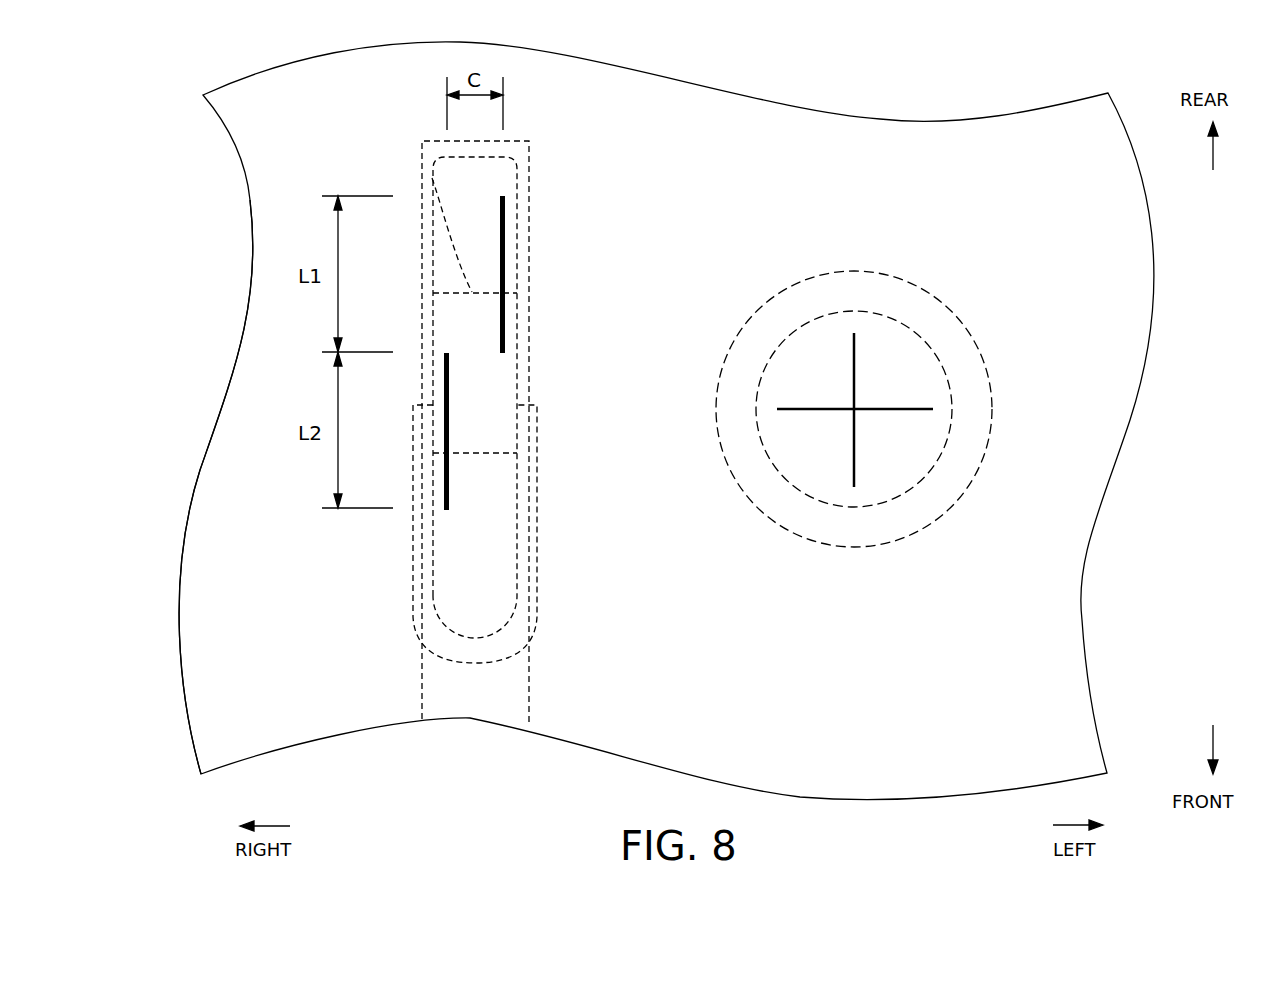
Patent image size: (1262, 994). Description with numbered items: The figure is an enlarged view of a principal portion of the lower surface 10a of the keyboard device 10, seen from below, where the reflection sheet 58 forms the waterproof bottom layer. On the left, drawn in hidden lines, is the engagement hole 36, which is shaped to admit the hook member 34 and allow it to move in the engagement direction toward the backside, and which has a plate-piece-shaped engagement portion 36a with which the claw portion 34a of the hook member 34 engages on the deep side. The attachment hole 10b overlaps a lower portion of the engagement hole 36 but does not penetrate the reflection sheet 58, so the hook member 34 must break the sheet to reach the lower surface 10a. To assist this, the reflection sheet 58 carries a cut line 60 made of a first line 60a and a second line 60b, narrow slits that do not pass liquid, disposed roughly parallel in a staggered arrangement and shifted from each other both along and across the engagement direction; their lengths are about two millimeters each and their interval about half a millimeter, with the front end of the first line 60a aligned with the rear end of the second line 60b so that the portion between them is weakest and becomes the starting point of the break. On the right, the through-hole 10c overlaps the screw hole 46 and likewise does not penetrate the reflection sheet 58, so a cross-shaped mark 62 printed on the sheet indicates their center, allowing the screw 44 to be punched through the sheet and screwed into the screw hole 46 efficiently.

The keyboard device 10 is at (129, 43).
The lower surface 10a is at (217, 496).
The attachment hole 10b is at (518, 676).
The through-hole 10c is at (880, 314).
The hook member 34 is at (518, 441).
The claw portion 34a is at (512, 160).
The engagement hole 36 is at (547, 432).
The engagement portion 36a is at (432, 178).
The screw 44 is at (828, 272).
The screw hole 46 is at (912, 389).
The reflection sheet 58 is at (217, 596).
The cut line 60 is at (640, 207).
The first line 60a is at (507, 247).
The second line 60b is at (449, 436).
The mark 62 is at (856, 460).